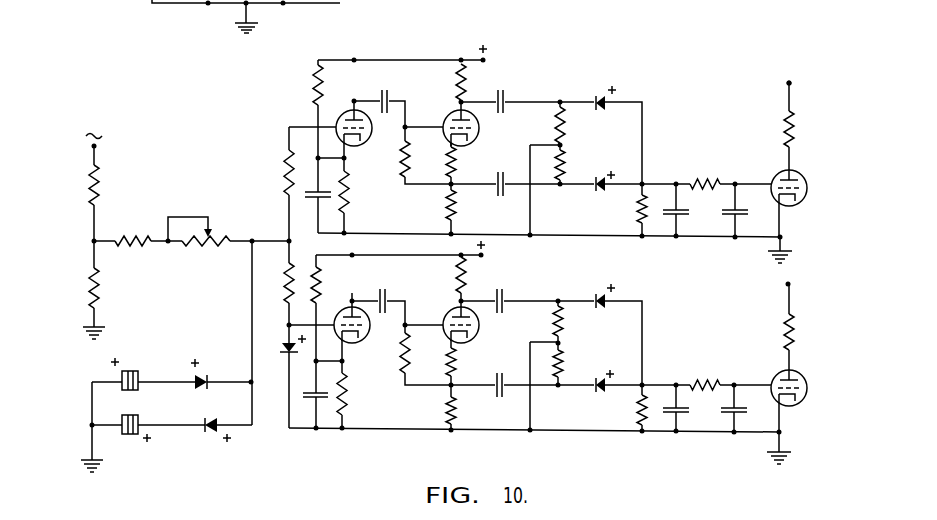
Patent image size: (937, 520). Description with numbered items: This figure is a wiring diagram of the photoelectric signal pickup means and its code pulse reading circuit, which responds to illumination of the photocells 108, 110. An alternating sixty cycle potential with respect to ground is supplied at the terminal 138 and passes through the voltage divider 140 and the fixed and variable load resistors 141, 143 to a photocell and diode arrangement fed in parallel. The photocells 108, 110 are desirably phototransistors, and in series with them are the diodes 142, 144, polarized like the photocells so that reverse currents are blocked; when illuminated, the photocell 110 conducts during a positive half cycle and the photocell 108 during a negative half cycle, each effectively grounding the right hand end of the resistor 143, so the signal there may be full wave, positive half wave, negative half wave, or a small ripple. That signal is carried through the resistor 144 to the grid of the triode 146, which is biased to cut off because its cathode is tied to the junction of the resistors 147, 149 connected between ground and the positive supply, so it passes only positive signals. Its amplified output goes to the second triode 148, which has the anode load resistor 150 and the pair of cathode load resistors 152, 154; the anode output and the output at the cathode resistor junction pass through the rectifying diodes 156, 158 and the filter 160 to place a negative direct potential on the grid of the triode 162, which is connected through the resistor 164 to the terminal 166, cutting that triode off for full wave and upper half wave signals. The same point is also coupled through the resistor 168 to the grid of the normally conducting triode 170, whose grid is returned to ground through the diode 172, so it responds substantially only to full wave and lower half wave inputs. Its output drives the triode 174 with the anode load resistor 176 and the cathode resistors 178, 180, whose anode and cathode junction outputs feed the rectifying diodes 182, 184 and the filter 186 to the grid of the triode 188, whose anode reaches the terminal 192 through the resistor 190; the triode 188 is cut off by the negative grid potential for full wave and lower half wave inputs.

The photocell 108 is at (132, 371).
The photocell 110 is at (128, 434).
The terminal 138 is at (98, 144).
The voltage divider 140 is at (78, 188).
The fixed load resistor 141 is at (135, 248).
The diode 142 is at (207, 373).
The variable load resistor 143 is at (198, 248).
The diode / resistor 144 is at (287, 185).
The triode 146 is at (370, 137).
The resistor 147 is at (350, 188).
The second triode 148 is at (450, 115).
The resistor 149 is at (315, 83).
The anode load resistor 150 is at (468, 85).
The cathode load resistor 152 is at (463, 162).
The cathode load resistor 154 is at (463, 213).
The rectifying diode 156 is at (595, 98).
The rectifying diode 158 is at (595, 192).
The filter 160 is at (725, 150).
The triode 162 is at (803, 178).
The resistor 164 is at (785, 140).
The terminal 166 is at (790, 83).
The resistor 168 is at (288, 296).
The triode 170 is at (355, 340).
The diode 172 is at (287, 346).
The triode 174 is at (448, 315).
The anode load resistor 176 is at (468, 283).
The cathode resistor 178 is at (457, 360).
The cathode resistor 180 is at (457, 413).
The rectifying diode 182 is at (595, 298).
The rectifying diode 184 is at (595, 391).
The filter 186 is at (714, 370).
The triode 188 is at (813, 367).
The resistor 190 is at (778, 342).
The terminal 192 is at (786, 285).